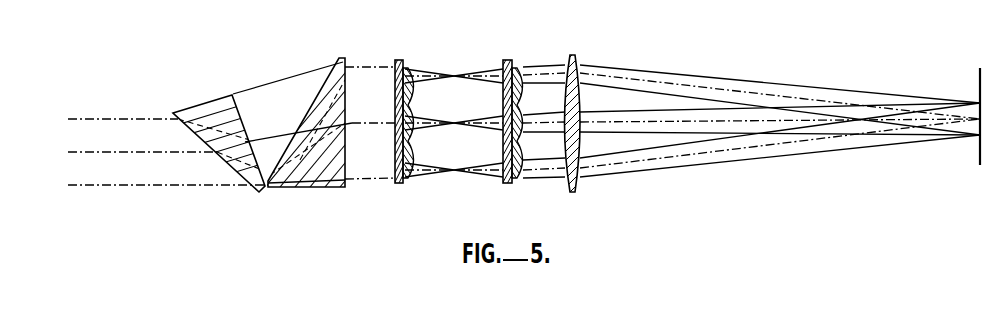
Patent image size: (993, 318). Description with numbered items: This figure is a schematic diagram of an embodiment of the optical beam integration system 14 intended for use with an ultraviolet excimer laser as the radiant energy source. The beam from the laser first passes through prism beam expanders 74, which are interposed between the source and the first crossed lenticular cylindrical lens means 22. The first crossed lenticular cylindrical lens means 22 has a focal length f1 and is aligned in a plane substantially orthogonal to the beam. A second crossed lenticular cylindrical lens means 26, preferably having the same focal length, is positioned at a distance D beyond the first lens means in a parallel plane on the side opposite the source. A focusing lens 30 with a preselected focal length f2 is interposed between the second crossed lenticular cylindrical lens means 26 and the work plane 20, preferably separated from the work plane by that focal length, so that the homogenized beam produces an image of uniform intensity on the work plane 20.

The optical beam integration system 14 is at (398, 37).
The work plane 20 is at (980, 79).
The first crossed lenticular cylindrical lens means 22 is at (409, 190).
The second crossed lenticular cylindrical lens means 26 is at (516, 190).
The focusing lens 30 is at (573, 193).
The prism beam expanders 74 is at (341, 61).